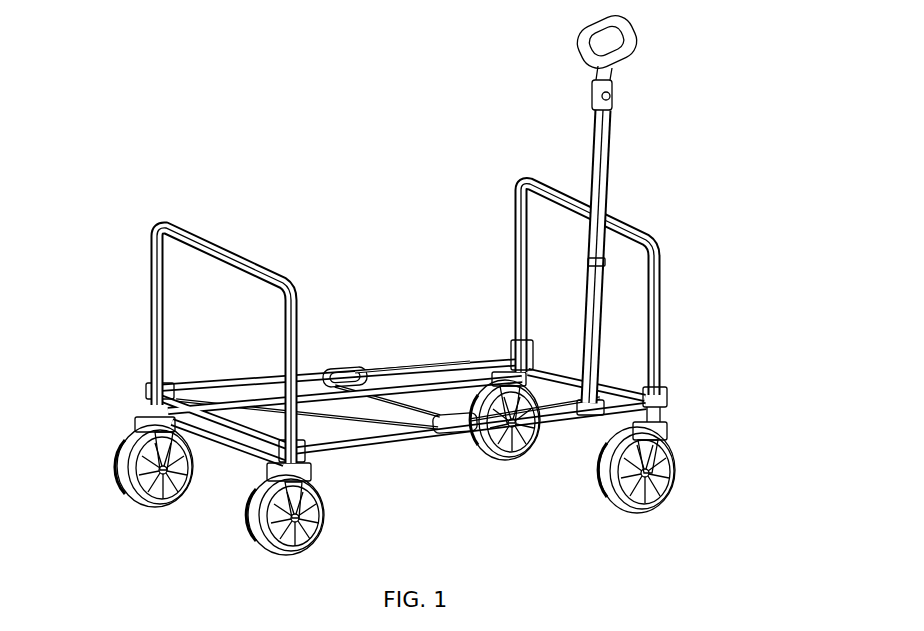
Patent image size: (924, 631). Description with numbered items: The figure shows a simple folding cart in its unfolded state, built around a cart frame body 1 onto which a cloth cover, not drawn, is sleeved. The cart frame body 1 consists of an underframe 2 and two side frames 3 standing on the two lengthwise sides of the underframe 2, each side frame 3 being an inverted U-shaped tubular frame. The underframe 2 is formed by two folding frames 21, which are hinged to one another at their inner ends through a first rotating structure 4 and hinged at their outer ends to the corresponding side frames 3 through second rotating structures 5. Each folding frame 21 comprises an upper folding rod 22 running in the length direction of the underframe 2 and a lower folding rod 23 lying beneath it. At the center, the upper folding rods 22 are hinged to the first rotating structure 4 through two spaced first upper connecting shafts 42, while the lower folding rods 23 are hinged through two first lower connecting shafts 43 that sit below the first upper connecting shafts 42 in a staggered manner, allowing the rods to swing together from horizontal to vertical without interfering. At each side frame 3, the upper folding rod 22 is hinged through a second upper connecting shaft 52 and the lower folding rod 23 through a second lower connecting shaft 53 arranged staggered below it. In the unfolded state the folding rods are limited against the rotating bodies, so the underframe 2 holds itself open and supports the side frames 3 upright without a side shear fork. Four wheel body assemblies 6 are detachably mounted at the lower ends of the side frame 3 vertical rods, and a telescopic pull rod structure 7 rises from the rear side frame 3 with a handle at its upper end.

The cart frame body 1 is at (408, 320).
The underframe 2 is at (657, 388).
The folding frame 21 is at (514, 364).
The upper folding rod 22 is at (230, 388).
The lower folding rod 23 is at (160, 396).
The side frame 3 is at (150, 330).
The first rotating structure 4 is at (476, 440).
The first upper connecting shaft 42 is at (344, 371).
The first lower connecting shaft 43 is at (368, 374).
The second rotating structure 5 is at (310, 460).
The second upper connecting shaft 52 is at (353, 447).
The second lower connecting shaft 53 is at (313, 450).
The wheel body assembly 6 is at (670, 457).
The pull rod structure 7 is at (606, 193).